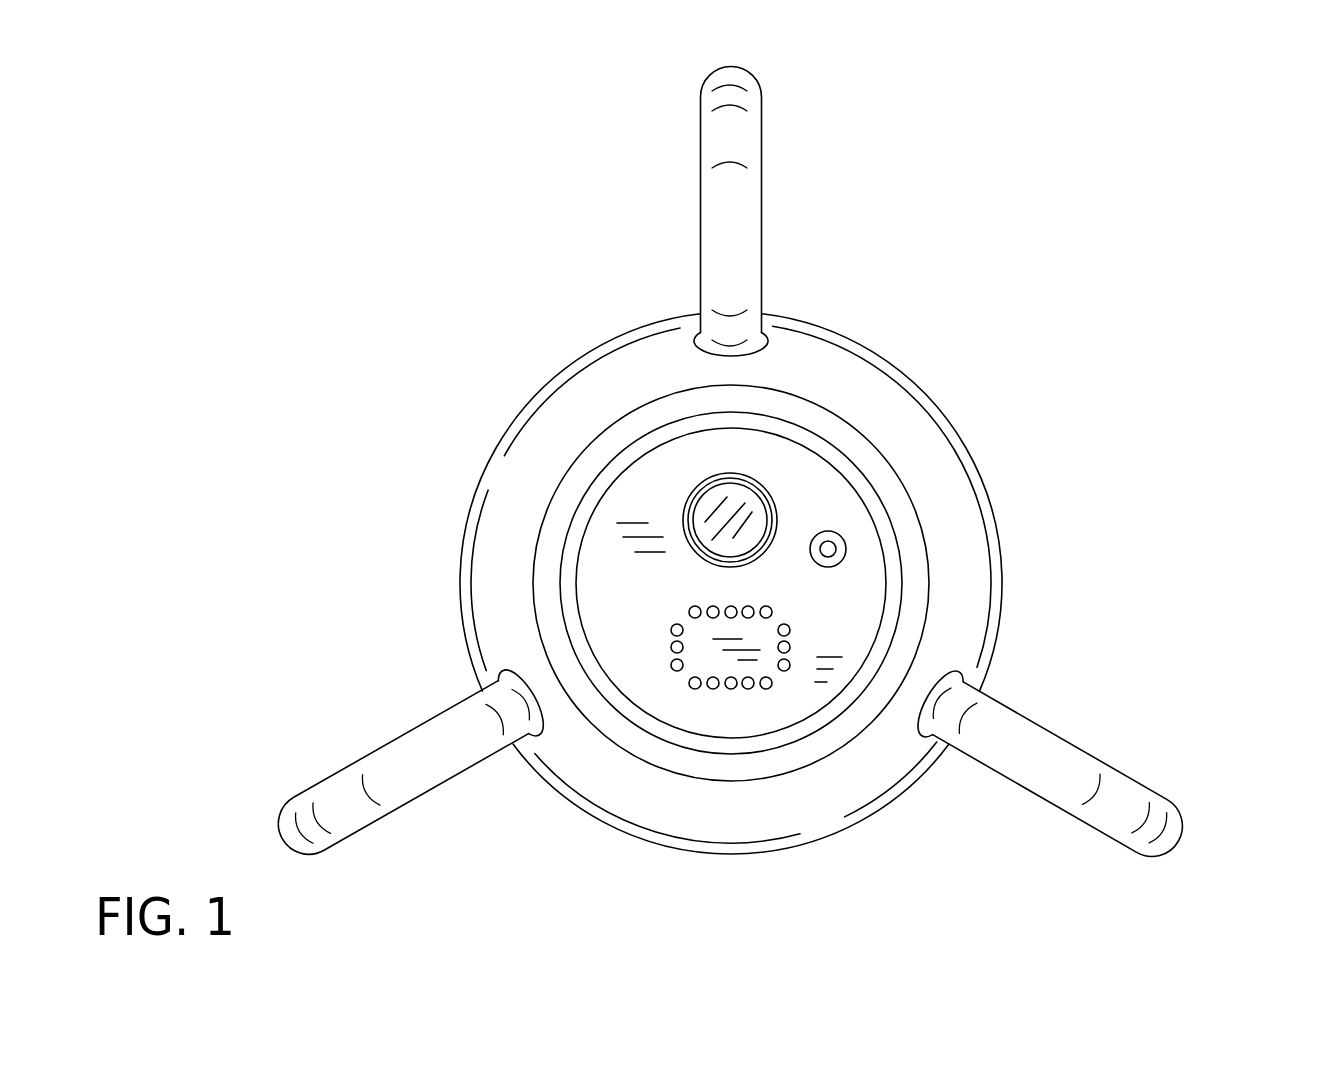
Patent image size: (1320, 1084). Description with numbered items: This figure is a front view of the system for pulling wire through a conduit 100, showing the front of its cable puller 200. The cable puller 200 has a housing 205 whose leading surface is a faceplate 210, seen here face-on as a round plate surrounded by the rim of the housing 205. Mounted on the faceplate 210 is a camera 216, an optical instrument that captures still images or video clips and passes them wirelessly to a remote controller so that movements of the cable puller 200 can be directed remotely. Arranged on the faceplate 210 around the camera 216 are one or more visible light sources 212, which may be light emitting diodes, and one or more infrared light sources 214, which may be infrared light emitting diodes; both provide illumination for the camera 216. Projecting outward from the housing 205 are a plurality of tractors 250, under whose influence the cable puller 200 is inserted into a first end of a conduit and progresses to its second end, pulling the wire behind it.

The system for pulling wire through a conduit 100 is at (285, 230).
The cable puller 200 is at (1196, 63).
The housing 205 is at (478, 497).
The faceplate 210 is at (628, 665).
The visible light sources 212 is at (765, 690).
The infrared light sources 214 is at (832, 548).
The camera 216 is at (742, 500).
The tractors 250 is at (745, 128).